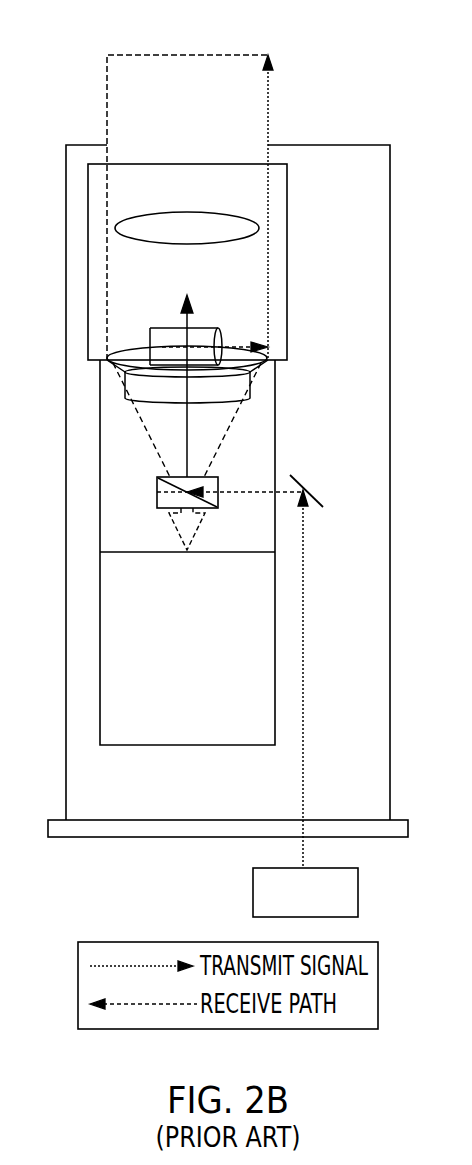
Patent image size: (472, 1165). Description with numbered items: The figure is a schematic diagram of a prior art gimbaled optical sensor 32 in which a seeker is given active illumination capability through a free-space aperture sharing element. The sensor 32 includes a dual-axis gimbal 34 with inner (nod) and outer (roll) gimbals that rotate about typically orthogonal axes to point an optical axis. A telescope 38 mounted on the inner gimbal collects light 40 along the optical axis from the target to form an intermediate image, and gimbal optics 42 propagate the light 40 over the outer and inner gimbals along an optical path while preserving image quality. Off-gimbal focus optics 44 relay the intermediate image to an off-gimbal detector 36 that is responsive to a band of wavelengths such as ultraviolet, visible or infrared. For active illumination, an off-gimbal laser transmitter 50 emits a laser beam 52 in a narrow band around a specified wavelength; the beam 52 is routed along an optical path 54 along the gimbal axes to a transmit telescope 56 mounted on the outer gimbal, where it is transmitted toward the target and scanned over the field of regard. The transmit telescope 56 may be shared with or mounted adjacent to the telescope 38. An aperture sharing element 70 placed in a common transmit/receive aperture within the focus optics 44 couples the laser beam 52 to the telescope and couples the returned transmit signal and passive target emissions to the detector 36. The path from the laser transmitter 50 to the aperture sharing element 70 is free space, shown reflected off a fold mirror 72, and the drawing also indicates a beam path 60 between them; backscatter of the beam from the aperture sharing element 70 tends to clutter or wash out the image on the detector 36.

The gimbaled optical sensor 32 is at (330, 52).
The dual-axis gimbal 34 is at (203, 323).
The off-gimbal detector 36 is at (277, 645).
The telescope 38 is at (188, 212).
The light 40 is at (127, 122).
The gimbal optics 42 is at (130, 349).
The off-gimbal focus optics 44 is at (212, 510).
The off-gimbal laser transmitter 50 is at (358, 893).
The laser beam 52 is at (268, 108).
The optical path 54 is at (362, 545).
The transmit telescope 56 is at (288, 258).
The transmit beam path 60 is at (308, 580).
The aperture sharing element 70 is at (162, 494).
The fold mirror 72 is at (306, 492).